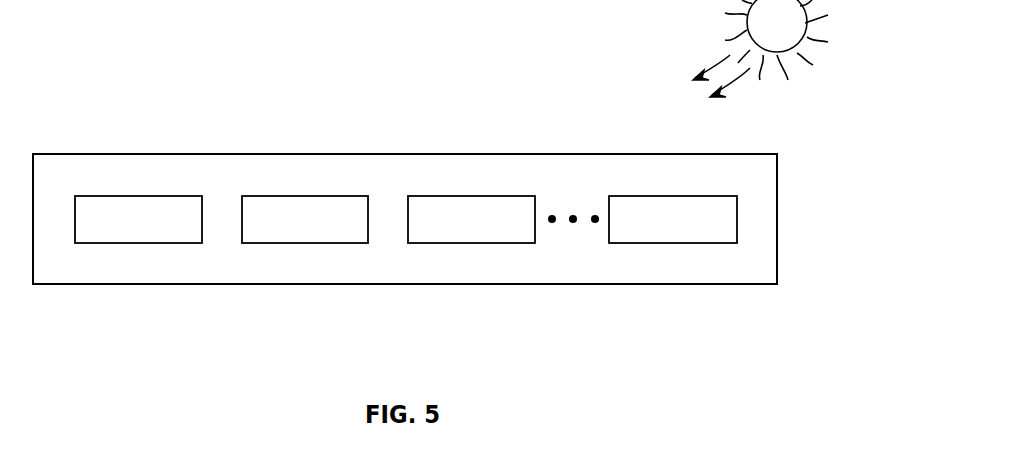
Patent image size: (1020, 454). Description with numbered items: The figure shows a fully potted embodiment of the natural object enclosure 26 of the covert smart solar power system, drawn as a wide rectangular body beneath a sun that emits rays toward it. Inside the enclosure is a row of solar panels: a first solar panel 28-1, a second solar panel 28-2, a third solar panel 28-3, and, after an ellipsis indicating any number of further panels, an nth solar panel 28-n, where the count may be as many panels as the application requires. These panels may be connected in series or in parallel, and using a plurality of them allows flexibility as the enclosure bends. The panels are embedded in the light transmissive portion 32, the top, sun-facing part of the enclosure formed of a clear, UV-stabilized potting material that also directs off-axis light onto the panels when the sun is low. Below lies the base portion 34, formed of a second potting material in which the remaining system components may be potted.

The natural object enclosure 26 is at (135, 80).
The light transmissive portion 32 is at (507, 154).
The base portion 34 is at (377, 272).
The first solar panel 28-1 is at (138, 243).
The second solar panel 28-2 is at (304, 243).
The third solar panel 28-3 is at (470, 243).
The nth solar panel 28-n is at (672, 243).